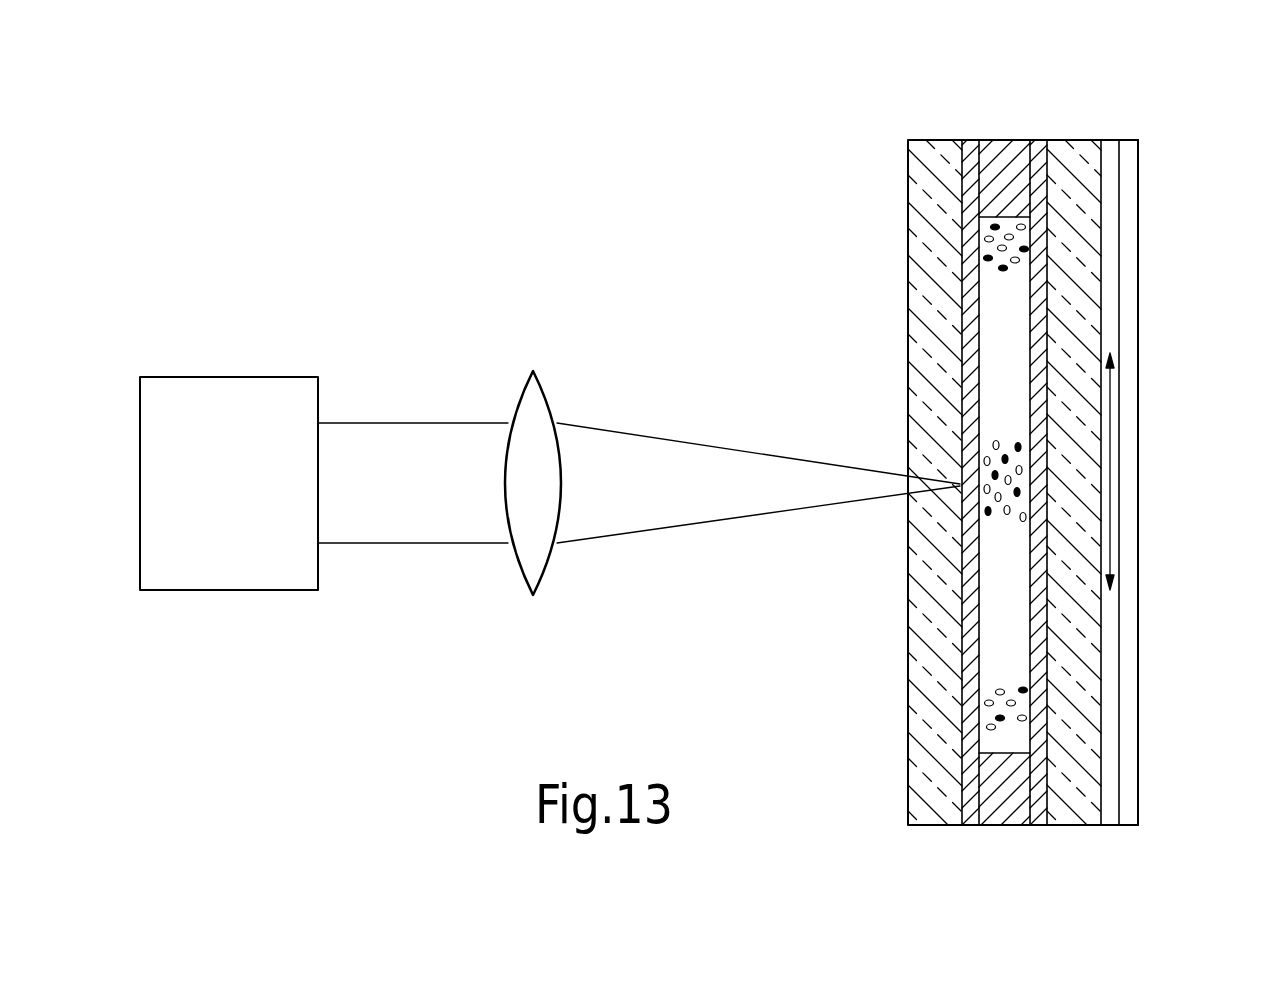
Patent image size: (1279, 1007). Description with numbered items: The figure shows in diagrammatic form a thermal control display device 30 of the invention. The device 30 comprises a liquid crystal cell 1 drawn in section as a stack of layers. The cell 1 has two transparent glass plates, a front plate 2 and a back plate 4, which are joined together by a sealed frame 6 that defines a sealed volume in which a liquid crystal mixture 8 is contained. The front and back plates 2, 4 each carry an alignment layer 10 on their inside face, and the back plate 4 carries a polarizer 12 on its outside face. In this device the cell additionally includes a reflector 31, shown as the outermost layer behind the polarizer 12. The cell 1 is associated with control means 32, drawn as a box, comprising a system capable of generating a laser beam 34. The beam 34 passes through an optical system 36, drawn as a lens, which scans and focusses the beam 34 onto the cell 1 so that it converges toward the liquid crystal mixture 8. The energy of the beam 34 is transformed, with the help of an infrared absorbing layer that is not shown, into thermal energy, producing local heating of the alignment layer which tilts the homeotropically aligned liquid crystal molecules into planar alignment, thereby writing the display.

The liquid crystal cell 1 is at (877, 423).
The front plate 2 is at (937, 808).
The back plate 4 is at (1077, 808).
The sealed frame 6 is at (1002, 172).
The liquid crystal mixture 8 is at (1005, 632).
The alignment layer 10 is at (972, 813).
The polarizer 12 is at (1107, 160).
The display device 30 is at (607, 238).
The reflector 31 is at (1128, 812).
The control means 32 is at (245, 383).
The laser beam 34 is at (412, 422).
The optical system 36 is at (552, 562).